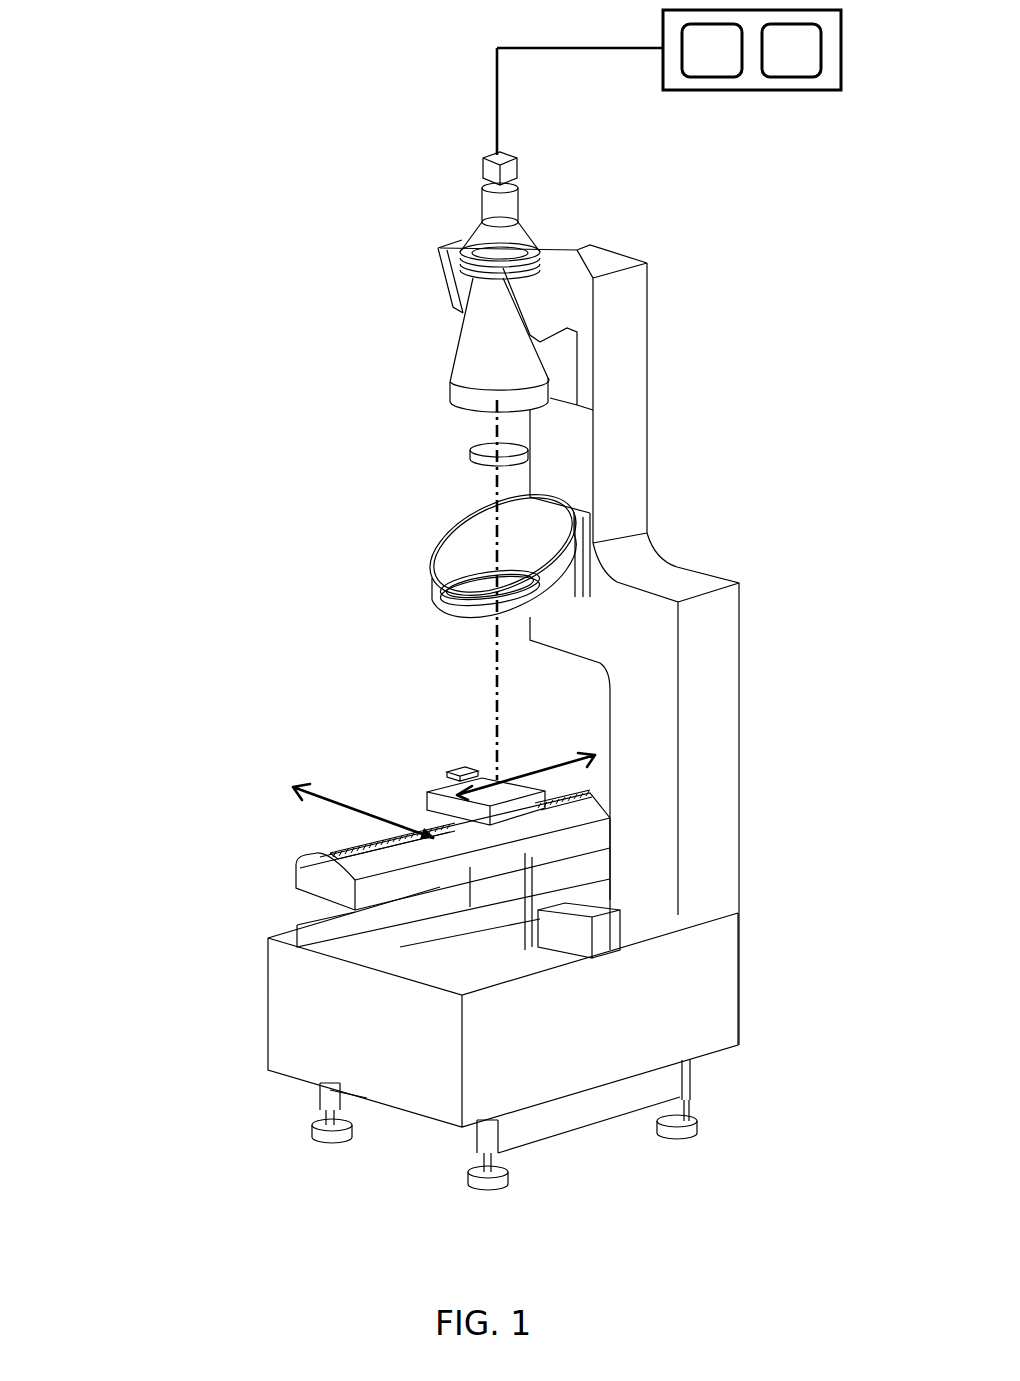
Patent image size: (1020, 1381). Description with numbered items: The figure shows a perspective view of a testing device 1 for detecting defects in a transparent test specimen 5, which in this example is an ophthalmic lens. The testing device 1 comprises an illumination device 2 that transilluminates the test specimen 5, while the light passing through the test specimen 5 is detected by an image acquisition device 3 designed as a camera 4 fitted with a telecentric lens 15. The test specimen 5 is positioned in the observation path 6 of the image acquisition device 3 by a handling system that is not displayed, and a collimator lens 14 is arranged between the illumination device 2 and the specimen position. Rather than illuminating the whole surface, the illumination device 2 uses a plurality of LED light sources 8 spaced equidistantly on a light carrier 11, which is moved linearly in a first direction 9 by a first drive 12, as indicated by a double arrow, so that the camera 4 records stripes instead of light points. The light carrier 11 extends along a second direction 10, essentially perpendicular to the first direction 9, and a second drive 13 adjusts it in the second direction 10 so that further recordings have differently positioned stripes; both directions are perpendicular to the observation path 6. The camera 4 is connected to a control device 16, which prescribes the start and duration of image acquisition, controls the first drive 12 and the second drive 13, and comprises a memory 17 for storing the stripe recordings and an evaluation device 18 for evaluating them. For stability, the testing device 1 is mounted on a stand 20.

The testing device 1 is at (742, 704).
The illumination device 2 is at (448, 775).
The image acquisition device 3 is at (498, 212).
The camera 4 is at (489, 291).
The test specimen 5 is at (483, 462).
The observation path 6 is at (502, 668).
The light sources 8 is at (540, 798).
The first direction 9 is at (535, 793).
The second direction 10 is at (322, 797).
The light carrier 11 is at (475, 785).
The first drive 12 is at (537, 838).
The second drive 13 is at (520, 928).
The collimator lens 14 is at (480, 595).
The telecentric lens 15 is at (492, 363).
The control device 16 is at (687, 95).
The memory 17 is at (722, 63).
The evaluation device 18 is at (802, 62).
The stand 20 is at (630, 1027).